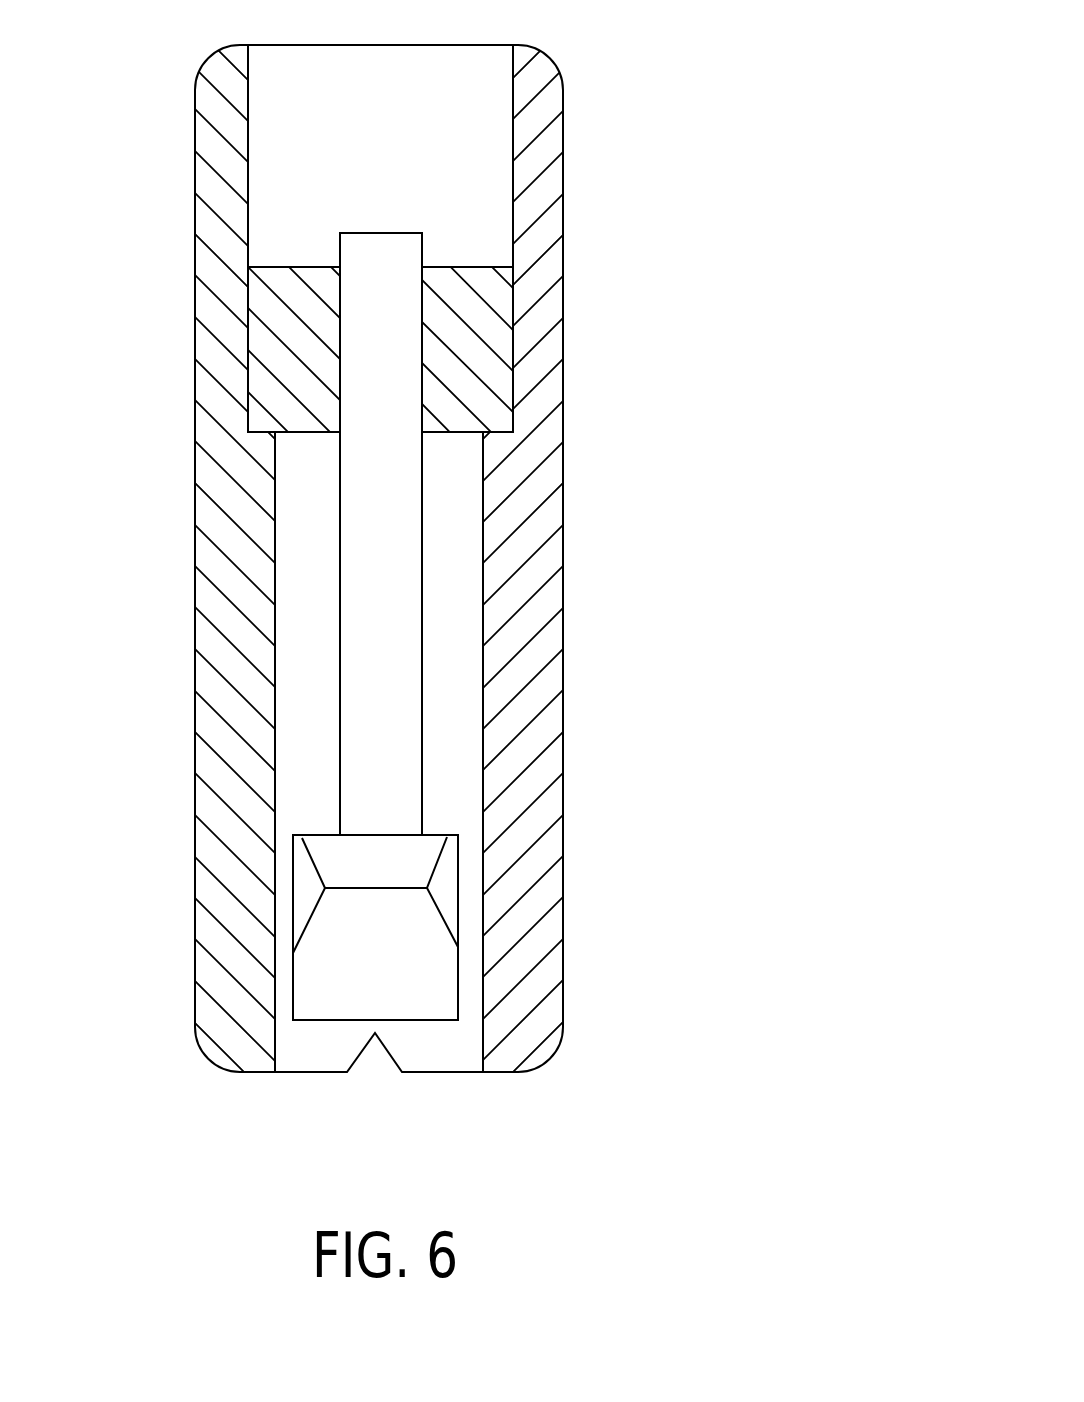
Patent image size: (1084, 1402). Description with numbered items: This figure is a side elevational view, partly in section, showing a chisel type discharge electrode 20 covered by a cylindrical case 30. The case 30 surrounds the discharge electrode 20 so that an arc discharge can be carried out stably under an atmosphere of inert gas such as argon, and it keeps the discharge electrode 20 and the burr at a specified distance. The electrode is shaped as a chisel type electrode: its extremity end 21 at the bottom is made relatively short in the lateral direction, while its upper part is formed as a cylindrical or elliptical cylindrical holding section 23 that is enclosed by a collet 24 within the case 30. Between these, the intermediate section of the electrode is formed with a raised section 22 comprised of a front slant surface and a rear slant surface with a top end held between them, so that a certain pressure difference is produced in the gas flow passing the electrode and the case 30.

The case 30 is at (202, 620).
The collet 24 is at (502, 346).
The holding section 23 is at (403, 591).
The raised section 22 is at (413, 887).
The extremity end 21 is at (425, 992).
The discharge electrode 20 is at (765, 535).